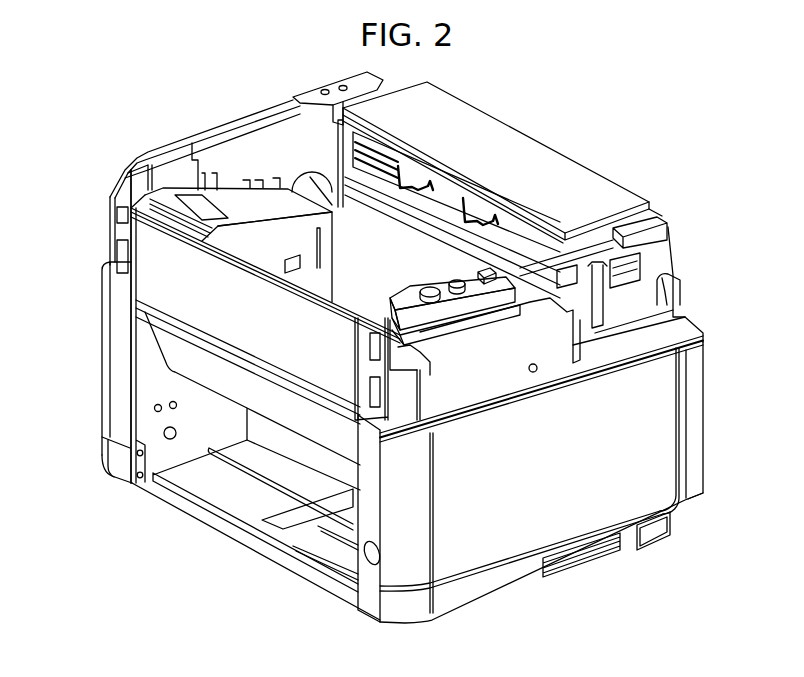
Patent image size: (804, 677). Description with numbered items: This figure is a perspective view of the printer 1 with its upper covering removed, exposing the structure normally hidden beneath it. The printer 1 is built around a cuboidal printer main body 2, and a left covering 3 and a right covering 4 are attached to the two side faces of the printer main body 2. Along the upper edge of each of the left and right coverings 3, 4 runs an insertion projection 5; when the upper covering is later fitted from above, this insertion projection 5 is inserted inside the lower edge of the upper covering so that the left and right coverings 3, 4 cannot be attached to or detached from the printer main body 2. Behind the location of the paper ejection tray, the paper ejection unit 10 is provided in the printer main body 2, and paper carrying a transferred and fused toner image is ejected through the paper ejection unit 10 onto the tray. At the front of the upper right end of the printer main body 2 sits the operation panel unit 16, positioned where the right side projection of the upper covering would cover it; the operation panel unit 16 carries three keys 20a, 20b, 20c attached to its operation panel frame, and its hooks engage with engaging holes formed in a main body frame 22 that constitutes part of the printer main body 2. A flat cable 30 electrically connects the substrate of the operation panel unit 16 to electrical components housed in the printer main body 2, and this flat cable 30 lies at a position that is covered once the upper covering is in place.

The printer 1 is at (617, 63).
The printer main body 2 is at (539, 168).
The left covering 3 is at (100, 350).
The right covering 4 is at (622, 463).
The insertion projection 5 is at (100, 261).
The paper ejection unit 10 is at (322, 141).
The operation panel unit 16 is at (473, 297).
The key 20a is at (430, 287).
The key 20b is at (457, 278).
The key 20c is at (486, 268).
The main body frame 22 is at (443, 307).
The flat cable 30 is at (685, 353).